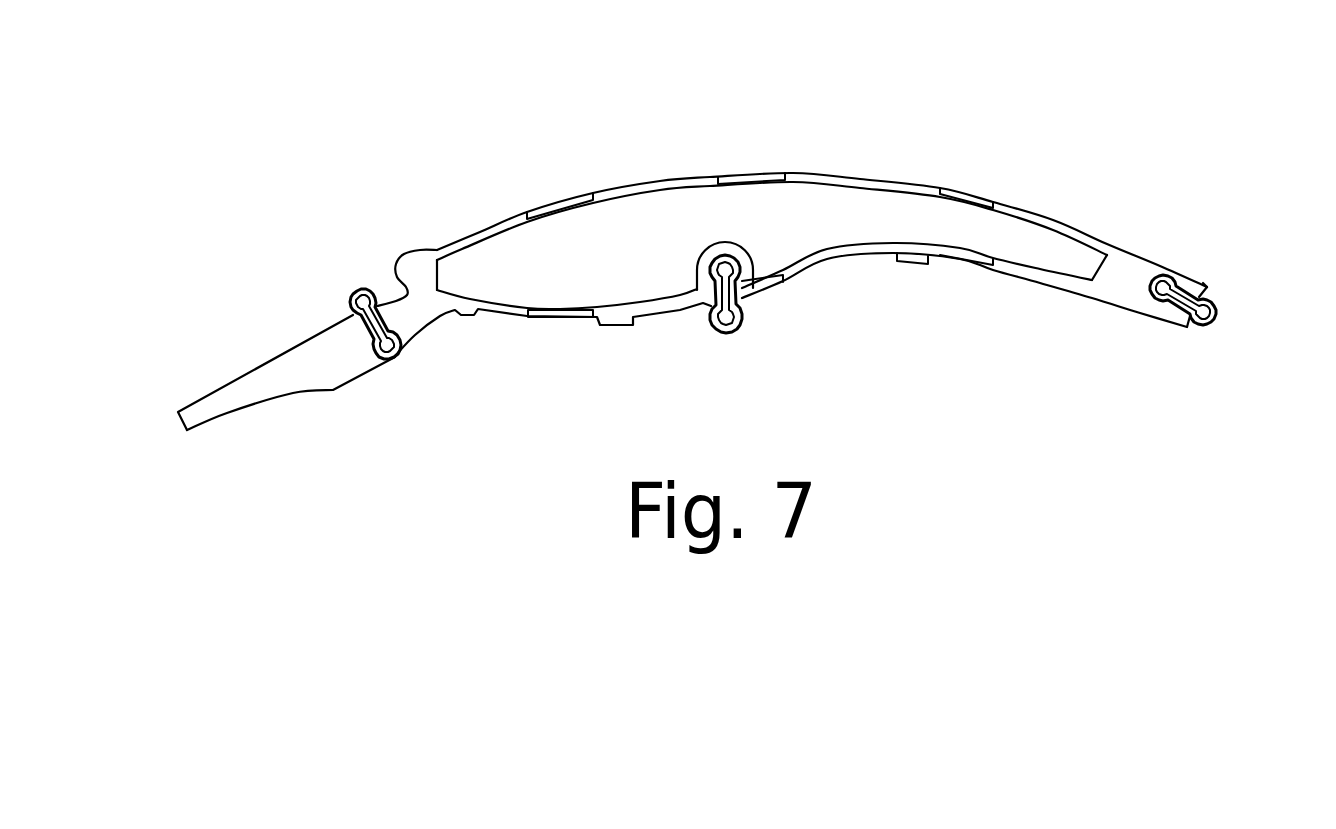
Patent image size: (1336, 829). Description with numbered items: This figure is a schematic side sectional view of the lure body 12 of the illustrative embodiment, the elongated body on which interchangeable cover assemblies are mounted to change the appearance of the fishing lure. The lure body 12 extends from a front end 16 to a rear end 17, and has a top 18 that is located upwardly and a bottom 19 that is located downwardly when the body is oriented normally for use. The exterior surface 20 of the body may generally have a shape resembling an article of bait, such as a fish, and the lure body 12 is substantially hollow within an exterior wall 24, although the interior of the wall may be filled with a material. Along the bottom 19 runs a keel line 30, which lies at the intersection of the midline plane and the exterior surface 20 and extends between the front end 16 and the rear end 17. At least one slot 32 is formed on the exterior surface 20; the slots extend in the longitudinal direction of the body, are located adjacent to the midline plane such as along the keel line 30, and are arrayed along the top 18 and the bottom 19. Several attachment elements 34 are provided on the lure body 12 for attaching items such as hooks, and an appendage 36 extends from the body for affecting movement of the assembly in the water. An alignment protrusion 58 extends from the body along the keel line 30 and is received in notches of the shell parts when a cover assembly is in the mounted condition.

The lure body 12 is at (822, 170).
The front end 16 is at (338, 199).
The rear end 17 is at (1264, 235).
The top 18 is at (772, 146).
The bottom 19 is at (964, 325).
The exterior surface 20 is at (1130, 207).
The exterior wall 24 is at (773, 108).
The keel line 30 is at (574, 325).
The slot 32 is at (760, 235).
The attachment element 34 is at (768, 333).
The appendage 36 is at (281, 417).
The alignment protrusion 58 is at (880, 327).